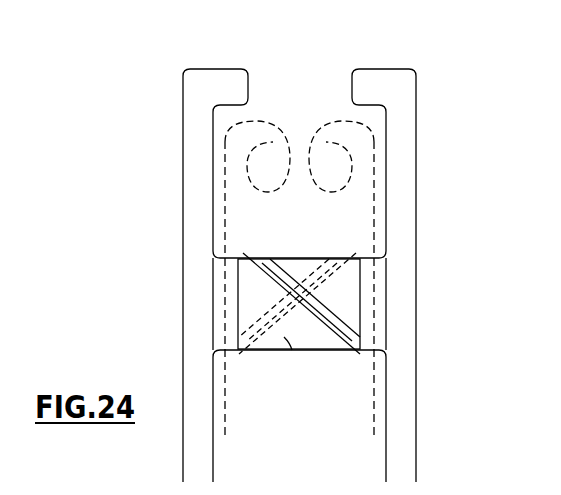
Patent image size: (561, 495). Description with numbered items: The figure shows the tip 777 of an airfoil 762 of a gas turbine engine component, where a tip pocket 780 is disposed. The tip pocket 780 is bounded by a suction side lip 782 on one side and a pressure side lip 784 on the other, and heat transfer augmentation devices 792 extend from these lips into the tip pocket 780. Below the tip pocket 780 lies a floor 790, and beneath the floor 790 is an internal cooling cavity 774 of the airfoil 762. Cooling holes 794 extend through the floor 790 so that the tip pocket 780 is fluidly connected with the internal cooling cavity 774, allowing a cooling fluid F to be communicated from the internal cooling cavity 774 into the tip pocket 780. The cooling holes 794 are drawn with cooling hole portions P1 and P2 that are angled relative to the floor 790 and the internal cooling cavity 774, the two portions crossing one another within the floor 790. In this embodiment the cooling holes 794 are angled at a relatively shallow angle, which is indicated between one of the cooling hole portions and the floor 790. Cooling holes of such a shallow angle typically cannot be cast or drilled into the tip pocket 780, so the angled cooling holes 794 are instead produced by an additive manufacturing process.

The tip 777 is at (178, 52).
The airfoil 762 is at (417, 438).
The heat transfer augmentation devices 792 is at (362, 82).
The tip pocket 780 is at (321, 221).
The internal cooling cavity 774 is at (299, 486).
The suction side lip 782 is at (220, 190).
The pressure side lip 784 is at (383, 130).
The floor 790 is at (310, 268).
The cooling holes 794 is at (283, 295).
The cooling hole portion P2 is at (338, 280).
The cooling hole portion P1 is at (336, 348).
The cooling fluid F is at (343, 193).